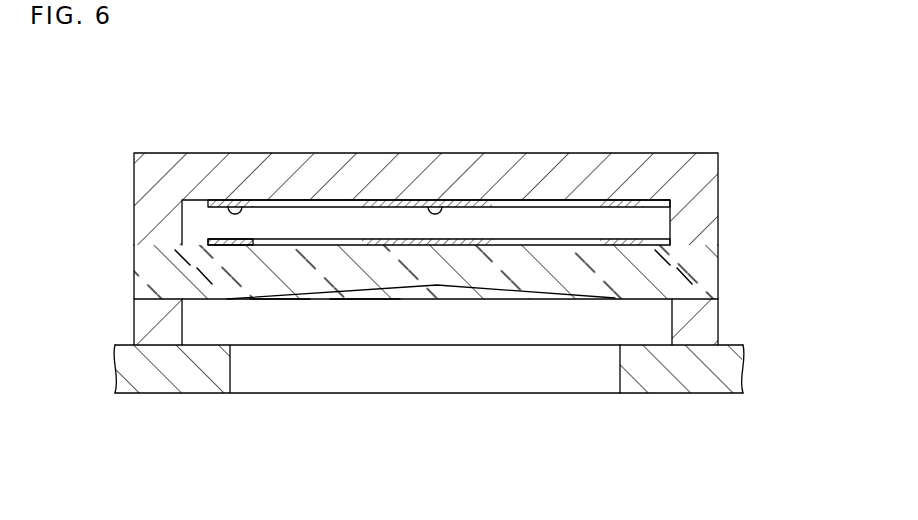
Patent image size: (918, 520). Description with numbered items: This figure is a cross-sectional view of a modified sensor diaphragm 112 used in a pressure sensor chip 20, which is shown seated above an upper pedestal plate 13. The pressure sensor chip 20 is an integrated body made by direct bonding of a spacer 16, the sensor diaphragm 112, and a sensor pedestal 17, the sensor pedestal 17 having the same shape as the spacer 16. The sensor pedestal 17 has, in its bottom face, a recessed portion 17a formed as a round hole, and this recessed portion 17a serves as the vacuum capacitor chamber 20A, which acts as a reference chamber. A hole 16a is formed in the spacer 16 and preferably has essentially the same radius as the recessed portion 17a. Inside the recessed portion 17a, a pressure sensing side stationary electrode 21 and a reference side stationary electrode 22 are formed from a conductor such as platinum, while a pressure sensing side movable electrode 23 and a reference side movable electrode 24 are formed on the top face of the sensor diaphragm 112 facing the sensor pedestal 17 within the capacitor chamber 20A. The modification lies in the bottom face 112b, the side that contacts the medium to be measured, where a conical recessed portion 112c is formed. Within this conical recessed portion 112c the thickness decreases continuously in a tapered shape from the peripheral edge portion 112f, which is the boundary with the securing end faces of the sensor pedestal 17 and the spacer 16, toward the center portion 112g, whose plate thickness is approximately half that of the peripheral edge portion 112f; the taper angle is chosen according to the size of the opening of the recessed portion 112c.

The upper pedestal plate 13 is at (683, 377).
The spacer 16 is at (165, 330).
The hole 16a is at (162, 336).
The sensor pedestal 17 is at (184, 163).
The recessed portion 17a is at (183, 200).
The pressure sensor chip 20 is at (426, 144).
The capacitor chamber 20A is at (328, 228).
The pressure sensing side stationary electrode 21 is at (427, 203).
The reference side stationary electrode 22 is at (222, 203).
The pressure sensing side movable electrode 23 is at (455, 238).
The reference side movable electrode 24 is at (245, 240).
The sensor diaphragm 112 is at (424, 363).
The bottom face 112b is at (279, 300).
The conical recessed portion 112c is at (363, 300).
The peripheral edge portion 112f is at (195, 272).
The center portion 112g is at (437, 285).